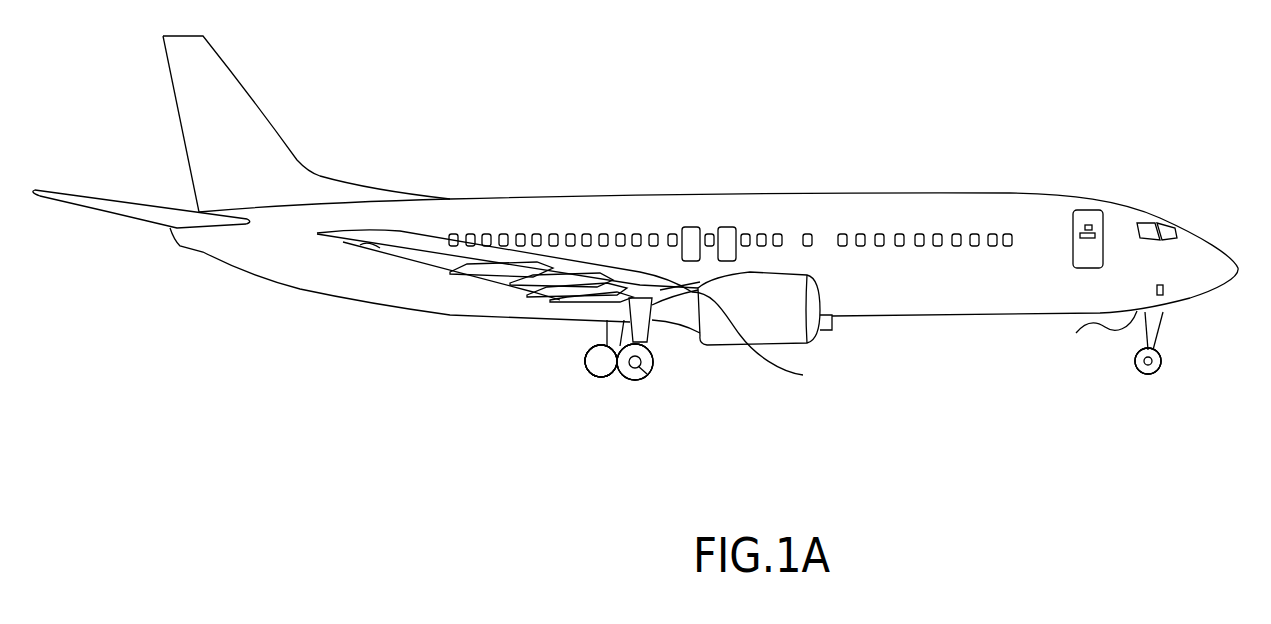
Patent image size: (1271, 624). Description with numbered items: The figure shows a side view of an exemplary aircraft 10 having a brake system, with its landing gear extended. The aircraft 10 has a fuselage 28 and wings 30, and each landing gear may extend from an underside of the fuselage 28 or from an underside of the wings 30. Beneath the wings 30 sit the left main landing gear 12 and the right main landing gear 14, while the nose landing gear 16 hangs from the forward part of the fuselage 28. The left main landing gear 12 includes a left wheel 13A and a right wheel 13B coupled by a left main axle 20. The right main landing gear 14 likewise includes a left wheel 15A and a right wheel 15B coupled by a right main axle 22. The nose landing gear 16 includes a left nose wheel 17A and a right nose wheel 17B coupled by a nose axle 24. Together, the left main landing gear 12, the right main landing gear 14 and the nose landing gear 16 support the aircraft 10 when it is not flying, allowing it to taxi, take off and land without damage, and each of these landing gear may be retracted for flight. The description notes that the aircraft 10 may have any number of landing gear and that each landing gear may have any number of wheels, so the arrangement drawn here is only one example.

The aircraft 10 is at (825, 87).
The left main landing gear 12 is at (571, 332).
The left wheel 13A is at (587, 352).
The right wheel 13B is at (596, 378).
The right main landing gear 14 is at (670, 384).
The left wheel 15A is at (654, 360).
The right wheel 15B is at (608, 380).
The nose landing gear 16 is at (1191, 344).
The left nose wheel 17A is at (1135, 366).
The right nose wheel 17B is at (1163, 363).
The left main axle 20 is at (586, 368).
The right main axle 22 is at (645, 376).
The nose axle 24 is at (1153, 372).
The fuselage 28 is at (1092, 331).
The wings 30 is at (758, 339).